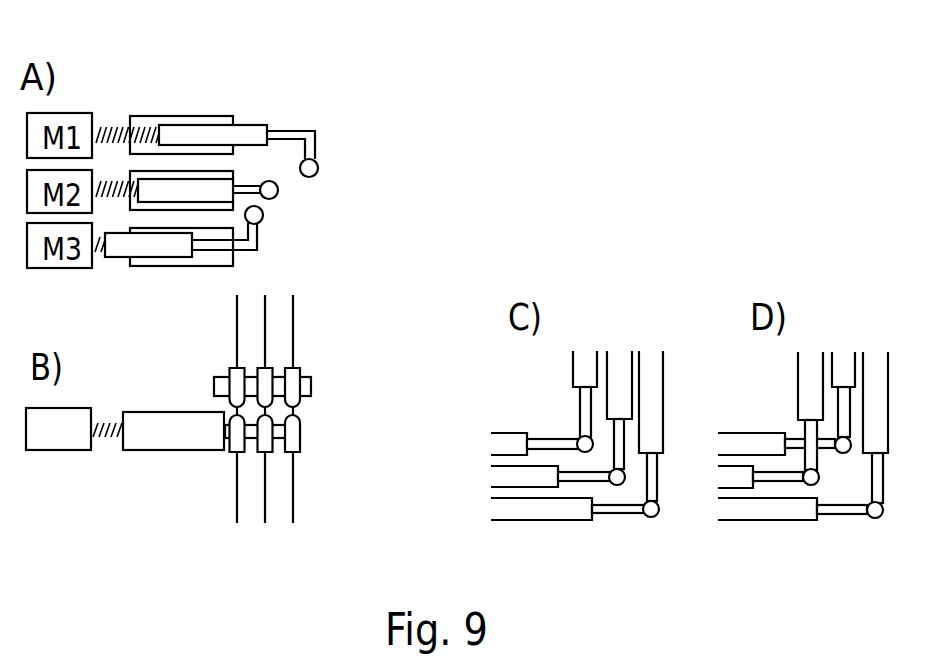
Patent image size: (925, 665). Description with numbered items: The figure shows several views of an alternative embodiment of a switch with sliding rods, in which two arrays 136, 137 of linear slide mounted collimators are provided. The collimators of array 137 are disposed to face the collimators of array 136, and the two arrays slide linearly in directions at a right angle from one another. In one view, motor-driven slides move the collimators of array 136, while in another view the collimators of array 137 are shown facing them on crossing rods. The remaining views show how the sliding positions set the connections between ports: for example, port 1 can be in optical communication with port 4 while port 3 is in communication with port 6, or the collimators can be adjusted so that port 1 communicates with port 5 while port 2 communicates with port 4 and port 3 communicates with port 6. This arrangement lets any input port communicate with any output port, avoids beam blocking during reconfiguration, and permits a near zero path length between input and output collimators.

The array of linear slide mounted collimators 136 is at (187, 80).
The array of linear slide mounted collimators 137 is at (329, 358).
The port 1 is at (654, 445).
The port 2 is at (638, 478).
The port 3 is at (670, 511).
The port 4 is at (698, 404).
The port 5 is at (731, 404).
The port 6 is at (763, 420).